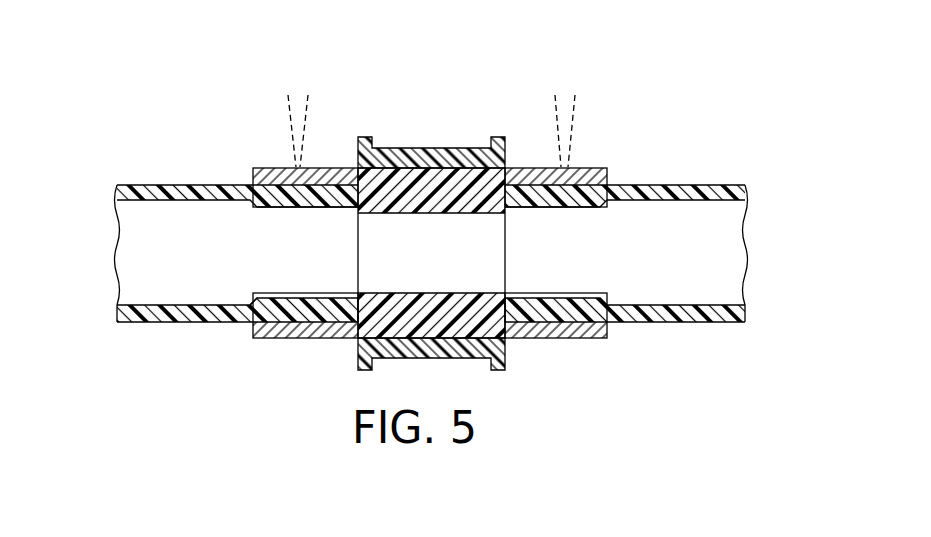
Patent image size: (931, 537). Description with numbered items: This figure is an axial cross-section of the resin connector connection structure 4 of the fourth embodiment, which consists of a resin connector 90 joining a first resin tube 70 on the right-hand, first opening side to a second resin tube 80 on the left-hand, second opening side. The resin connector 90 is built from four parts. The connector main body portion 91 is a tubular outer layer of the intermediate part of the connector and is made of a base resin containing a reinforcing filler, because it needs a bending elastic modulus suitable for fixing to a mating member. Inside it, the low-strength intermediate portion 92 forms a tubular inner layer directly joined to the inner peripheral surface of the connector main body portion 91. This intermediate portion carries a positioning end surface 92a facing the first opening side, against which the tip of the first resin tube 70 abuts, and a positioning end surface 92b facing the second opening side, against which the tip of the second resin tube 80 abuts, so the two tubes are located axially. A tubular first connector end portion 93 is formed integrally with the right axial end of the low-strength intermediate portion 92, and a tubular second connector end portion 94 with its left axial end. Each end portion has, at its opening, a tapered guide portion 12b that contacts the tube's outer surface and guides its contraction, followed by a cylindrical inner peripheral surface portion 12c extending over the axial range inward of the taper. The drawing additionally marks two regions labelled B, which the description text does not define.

The resin connector connection structure 4 is at (725, 147).
The first resin tube 70 is at (712, 320).
The second resin tube 80 is at (140, 322).
The guide portion 12b is at (240, 312).
The cylindrical inner peripheral surface portion 12c is at (298, 325).
The resin connector 90 is at (345, 80).
The connector main body portion 91 is at (390, 158).
The low-strength intermediate portion 92 is at (438, 178).
The positioning end surface 92a is at (533, 308).
The positioning end surface 92b is at (336, 306).
The first connector end portion 93 is at (522, 167).
The second connector end portion 94 is at (338, 167).
The brazing region B is at (290, 118).